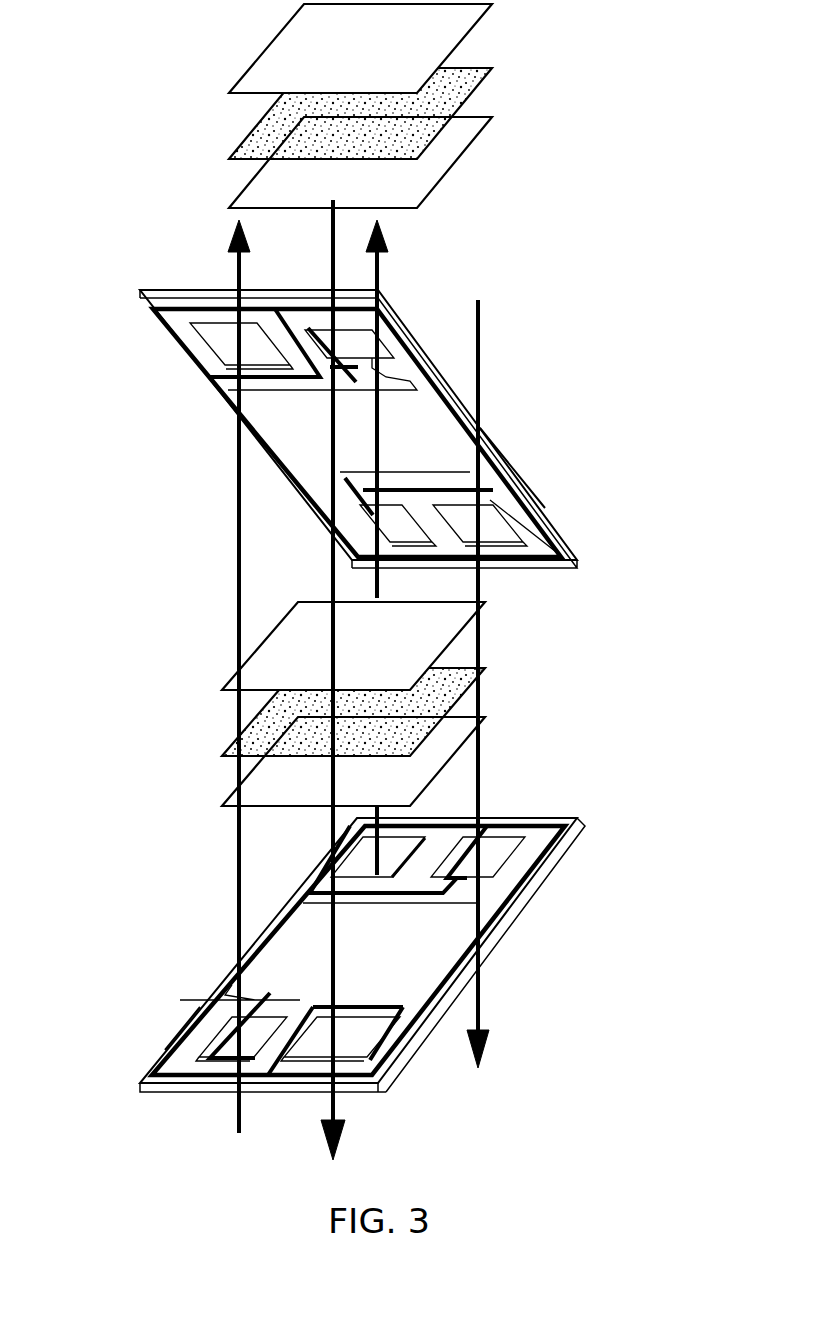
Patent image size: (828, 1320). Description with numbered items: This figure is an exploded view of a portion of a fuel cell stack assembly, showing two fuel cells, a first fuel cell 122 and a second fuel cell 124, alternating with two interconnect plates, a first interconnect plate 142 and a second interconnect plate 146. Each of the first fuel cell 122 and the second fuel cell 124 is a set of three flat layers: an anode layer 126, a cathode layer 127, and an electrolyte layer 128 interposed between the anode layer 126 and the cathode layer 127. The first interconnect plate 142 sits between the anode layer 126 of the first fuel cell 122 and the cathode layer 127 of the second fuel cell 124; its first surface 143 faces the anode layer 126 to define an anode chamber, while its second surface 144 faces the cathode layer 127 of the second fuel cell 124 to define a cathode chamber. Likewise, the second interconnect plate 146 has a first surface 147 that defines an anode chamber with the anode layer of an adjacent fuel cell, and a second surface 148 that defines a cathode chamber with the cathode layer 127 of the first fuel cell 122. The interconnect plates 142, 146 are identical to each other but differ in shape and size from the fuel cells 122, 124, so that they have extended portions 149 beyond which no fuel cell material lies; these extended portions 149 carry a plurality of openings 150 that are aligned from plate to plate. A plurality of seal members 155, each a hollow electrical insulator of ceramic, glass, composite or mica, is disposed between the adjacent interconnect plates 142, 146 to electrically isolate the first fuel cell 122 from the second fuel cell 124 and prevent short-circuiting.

The first fuel cell 122 is at (545, 628).
The second fuel cell 124 is at (588, 15).
The anode layer 126 is at (488, 16).
The cathode layer 127 is at (488, 128).
The electrolyte layer 128 is at (488, 80).
The first interconnect plate 142 is at (325, 410).
The first surface 143 is at (187, 360).
The second surface 144 is at (141, 290).
The second interconnect plate 146 is at (406, 965).
The first surface 147 is at (572, 832).
The second surface 148 is at (323, 883).
The extended portions 149 is at (555, 503).
The plurality of openings 150 is at (323, 342).
The plurality of seal members 155 is at (387, 1058).